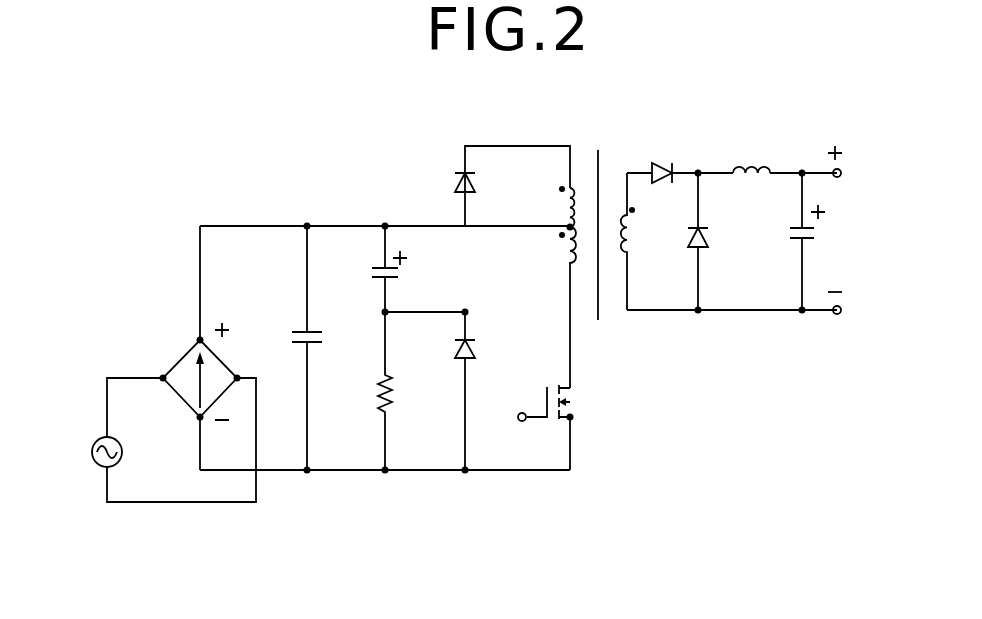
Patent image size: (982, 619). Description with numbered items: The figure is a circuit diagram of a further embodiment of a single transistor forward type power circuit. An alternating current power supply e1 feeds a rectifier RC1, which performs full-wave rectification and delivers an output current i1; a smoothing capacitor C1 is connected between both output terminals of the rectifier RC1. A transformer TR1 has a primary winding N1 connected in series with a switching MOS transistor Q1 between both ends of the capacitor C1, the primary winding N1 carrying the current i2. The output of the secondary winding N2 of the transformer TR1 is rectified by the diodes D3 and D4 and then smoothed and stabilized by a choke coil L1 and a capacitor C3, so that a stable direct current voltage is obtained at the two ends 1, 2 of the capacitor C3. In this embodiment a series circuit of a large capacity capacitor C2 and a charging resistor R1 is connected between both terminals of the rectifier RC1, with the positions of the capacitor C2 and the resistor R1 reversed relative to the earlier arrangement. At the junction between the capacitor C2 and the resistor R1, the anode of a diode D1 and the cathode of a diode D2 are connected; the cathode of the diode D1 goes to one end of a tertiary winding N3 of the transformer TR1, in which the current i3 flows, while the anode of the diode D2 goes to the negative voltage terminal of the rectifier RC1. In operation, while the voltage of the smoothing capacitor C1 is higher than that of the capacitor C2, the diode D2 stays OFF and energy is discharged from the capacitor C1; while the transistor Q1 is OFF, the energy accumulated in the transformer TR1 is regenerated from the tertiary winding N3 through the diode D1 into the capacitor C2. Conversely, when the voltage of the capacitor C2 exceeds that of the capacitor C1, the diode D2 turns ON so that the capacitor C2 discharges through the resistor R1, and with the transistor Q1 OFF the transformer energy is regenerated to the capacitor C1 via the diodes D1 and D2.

The rectifier RC1 is at (193, 368).
The alternating current power supply e1 is at (158, 440).
The smoothing capacitor C1 is at (318, 348).
The large capacity capacitor C2 is at (420, 271).
The charging resistor R1 is at (403, 391).
The diode D1 is at (512, 186).
The diode D2 is at (485, 391).
The transformer TR1 is at (602, 221).
The primary winding N1 is at (551, 307).
The secondary winding N2 is at (646, 241).
The tertiary winding N3 is at (550, 208).
The switching MOS transistor Q1 is at (570, 420).
The diode D3 is at (665, 157).
The diode D4 is at (717, 241).
The choke coil L1 is at (776, 158).
The capacitor C3 is at (820, 241).
The end of capacitor 1 is at (845, 167).
The end of capacitor 2 is at (845, 309).
The output current i1 is at (248, 208).
The primary winding current i2 is at (533, 282).
The tertiary winding current i3 is at (437, 157).